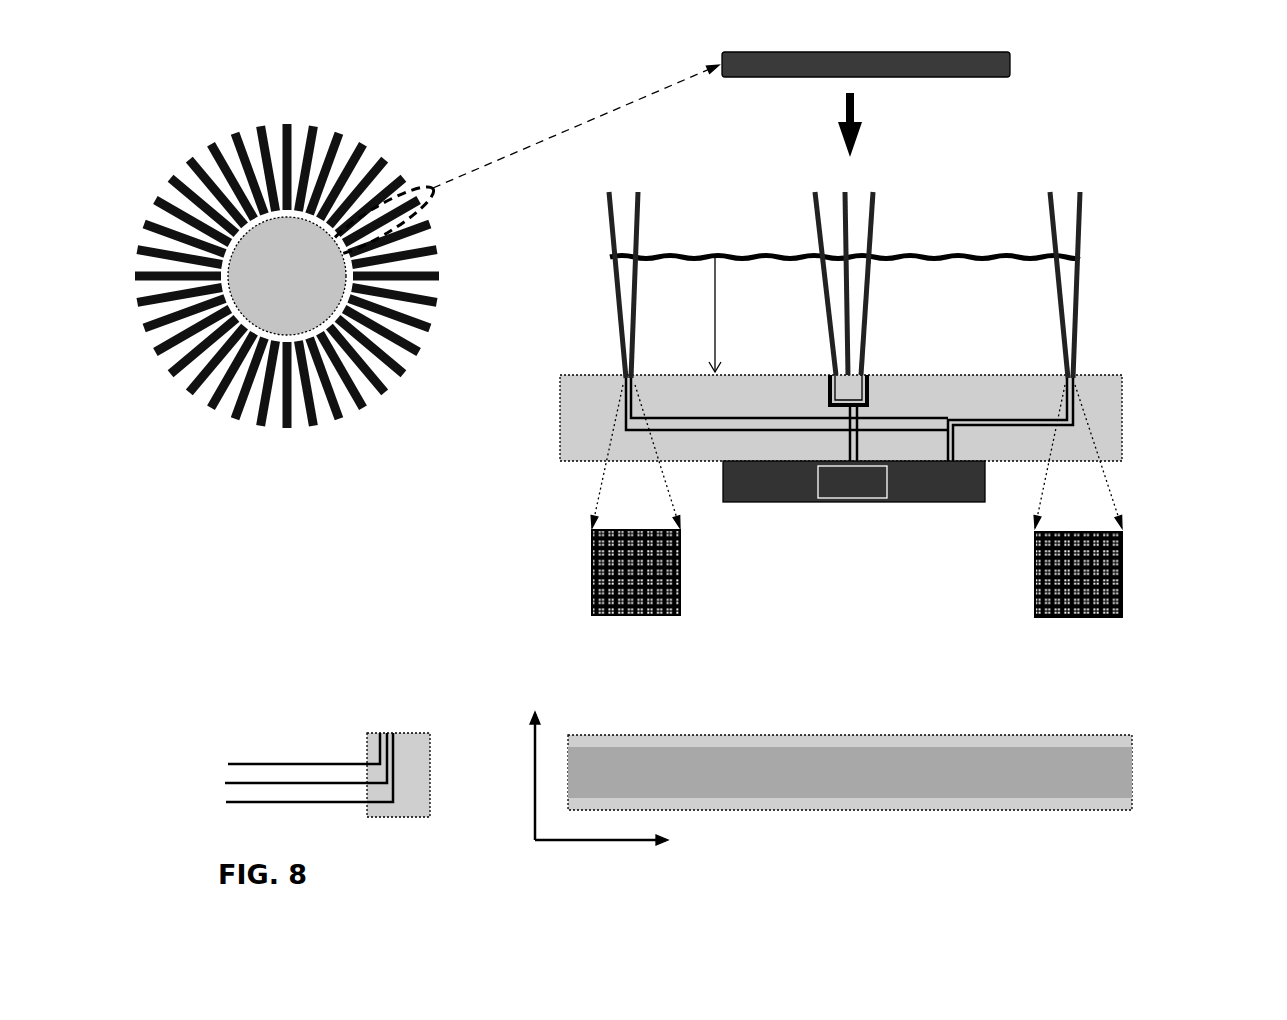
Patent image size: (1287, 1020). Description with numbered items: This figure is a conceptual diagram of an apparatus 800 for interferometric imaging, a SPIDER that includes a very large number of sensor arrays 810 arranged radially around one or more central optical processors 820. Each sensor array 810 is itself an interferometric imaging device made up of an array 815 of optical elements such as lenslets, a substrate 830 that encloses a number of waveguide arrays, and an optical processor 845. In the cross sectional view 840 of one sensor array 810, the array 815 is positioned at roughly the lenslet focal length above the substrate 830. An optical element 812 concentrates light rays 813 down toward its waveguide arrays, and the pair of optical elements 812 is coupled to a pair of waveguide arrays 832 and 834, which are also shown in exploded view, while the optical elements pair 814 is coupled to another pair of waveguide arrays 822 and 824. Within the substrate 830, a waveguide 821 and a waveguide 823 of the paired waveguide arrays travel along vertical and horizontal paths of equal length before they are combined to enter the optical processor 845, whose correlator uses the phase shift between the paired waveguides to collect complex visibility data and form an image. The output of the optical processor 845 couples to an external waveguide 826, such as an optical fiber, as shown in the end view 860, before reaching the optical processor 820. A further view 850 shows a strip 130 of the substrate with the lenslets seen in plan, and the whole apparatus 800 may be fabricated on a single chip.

The apparatus 800 is at (612, 237).
The sensor array 810 is at (417, 190).
The optical processor 820 is at (272, 283).
The optical element 812 is at (618, 252).
The light rays 813 is at (1047, 192).
The optical elements pair 814 is at (830, 250).
The array of optical elements 815 is at (768, 237).
The waveguide 821 is at (985, 420).
The waveguide array 822 is at (868, 372).
The waveguide 823 is at (670, 430).
The waveguide array 824 is at (830, 370).
The external waveguide 826 is at (296, 750).
The substrate 830 is at (1123, 415).
The waveguide array 832 is at (623, 377).
The waveguide array 834 is at (1075, 372).
The cross sectional view 840 is at (808, 501).
The optical processor 845 is at (836, 492).
The plan view 850 is at (862, 761).
The end view 860 is at (303, 728).
The substrate strip 130 is at (821, 788).